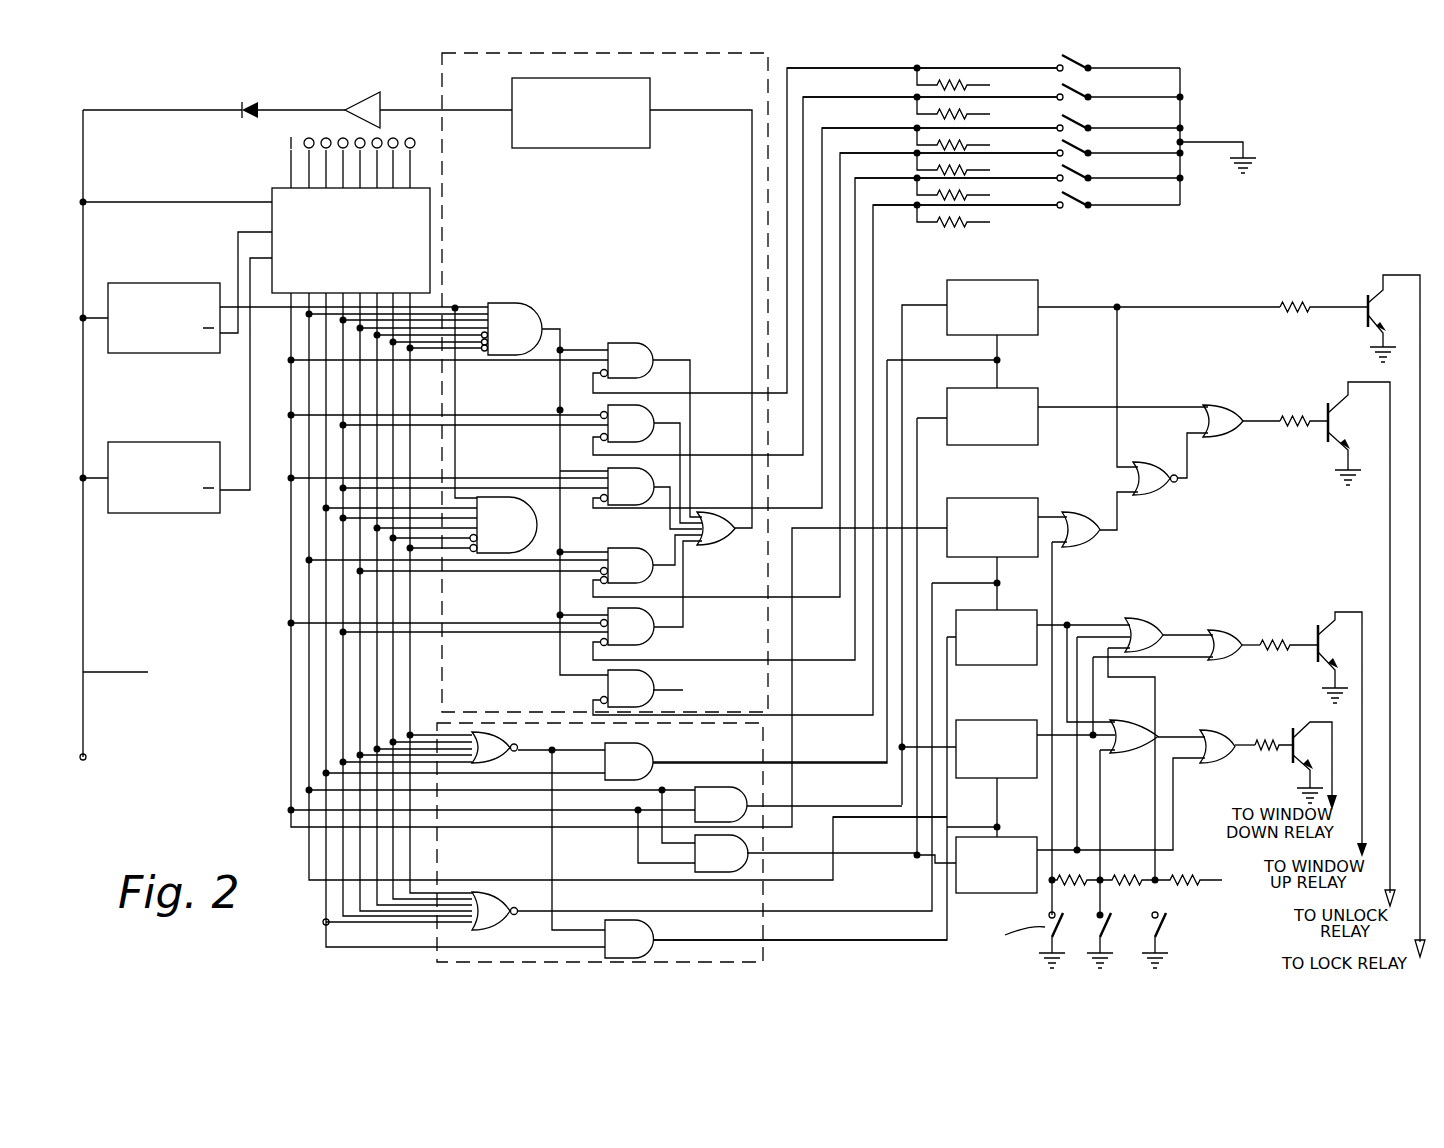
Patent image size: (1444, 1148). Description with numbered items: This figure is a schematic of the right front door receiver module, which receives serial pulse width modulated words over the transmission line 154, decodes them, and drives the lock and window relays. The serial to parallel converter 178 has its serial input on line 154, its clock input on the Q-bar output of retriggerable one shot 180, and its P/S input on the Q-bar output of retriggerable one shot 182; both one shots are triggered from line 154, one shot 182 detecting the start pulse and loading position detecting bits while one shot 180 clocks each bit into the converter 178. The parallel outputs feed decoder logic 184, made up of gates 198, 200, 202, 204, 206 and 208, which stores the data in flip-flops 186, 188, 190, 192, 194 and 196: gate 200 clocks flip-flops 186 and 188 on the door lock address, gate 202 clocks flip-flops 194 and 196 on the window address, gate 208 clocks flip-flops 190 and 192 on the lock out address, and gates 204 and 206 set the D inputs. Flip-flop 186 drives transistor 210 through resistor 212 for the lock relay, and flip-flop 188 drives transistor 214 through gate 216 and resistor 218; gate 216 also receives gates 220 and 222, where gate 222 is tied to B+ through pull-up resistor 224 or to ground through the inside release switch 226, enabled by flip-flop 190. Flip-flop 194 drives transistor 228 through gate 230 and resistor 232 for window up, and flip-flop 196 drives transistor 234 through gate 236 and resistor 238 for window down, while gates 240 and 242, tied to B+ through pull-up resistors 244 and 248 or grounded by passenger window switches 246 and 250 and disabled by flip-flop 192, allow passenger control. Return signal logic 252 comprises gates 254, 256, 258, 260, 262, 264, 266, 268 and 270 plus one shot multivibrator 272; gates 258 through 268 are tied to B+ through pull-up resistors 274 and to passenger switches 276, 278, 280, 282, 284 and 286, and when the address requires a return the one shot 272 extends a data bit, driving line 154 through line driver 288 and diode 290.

The transmission line 154 is at (131, 435).
The serial to parallel converter 178 is at (275, 190).
The retriggerable one shot 180 is at (158, 283).
The retriggerable one shot 182 is at (185, 500).
The decoder logic 184 is at (775, 957).
The flip-flop 186 is at (992, 280).
The flip-flop 188 is at (1020, 395).
The flip-flop 190 is at (985, 515).
The flip-flop 192 is at (1015, 620).
The flip-flop 194 is at (995, 735).
The flip-flop 196 is at (1012, 850).
The gate 198 is at (522, 745).
The gate 200 is at (645, 755).
The gate 202 is at (650, 937).
The gate 204 is at (722, 800).
The gate 206 is at (750, 850).
The gate 208 is at (495, 913).
The transistor 210 is at (1366, 295).
The current limiting resistor 212 is at (1290, 303).
The transistor 214 is at (1335, 405).
The gate 216 is at (1215, 405).
The resistor 218 is at (1293, 415).
The gate 220 is at (1160, 488).
The gate 222 is at (1092, 525).
The pull-up resistor 224 is at (1090, 922).
The switch 226 is at (1006, 938).
The transistor 228 is at (1322, 628).
The gate 230 is at (1222, 632).
The resistor 232 is at (1275, 640).
The transistor 234 is at (1305, 728).
The gate 236 is at (1215, 735).
The resistor 238 is at (1265, 750).
The gate 240 is at (1142, 625).
The gate 242 is at (1125, 740).
The pull-up resistor 244 is at (1128, 875).
The window control switch 246 is at (1112, 922).
The pull-up resistor 248 is at (1185, 883).
The window control switch 250 is at (1170, 922).
The return signal logic 252 is at (470, 74).
The gate 254 is at (522, 313).
The gate 256 is at (500, 518).
The gate 258 is at (635, 350).
The gate 260 is at (642, 415).
The gate 262 is at (642, 478).
The gate 264 is at (632, 565).
The gate 266 is at (640, 633).
The gate 268 is at (630, 683).
The gate 270 is at (722, 538).
The one shot multivibrator 272 is at (602, 148).
The pull-up resistors 274 is at (950, 62).
The door lock switch 276 is at (1085, 62).
The door unlock switch 278 is at (1085, 92).
The switch 280 is at (1085, 123).
The switch 282 is at (1085, 148).
The switch 284 is at (1085, 172).
The switch 286 is at (1078, 208).
The line driver 288 is at (352, 100).
The diode 290 is at (240, 108).